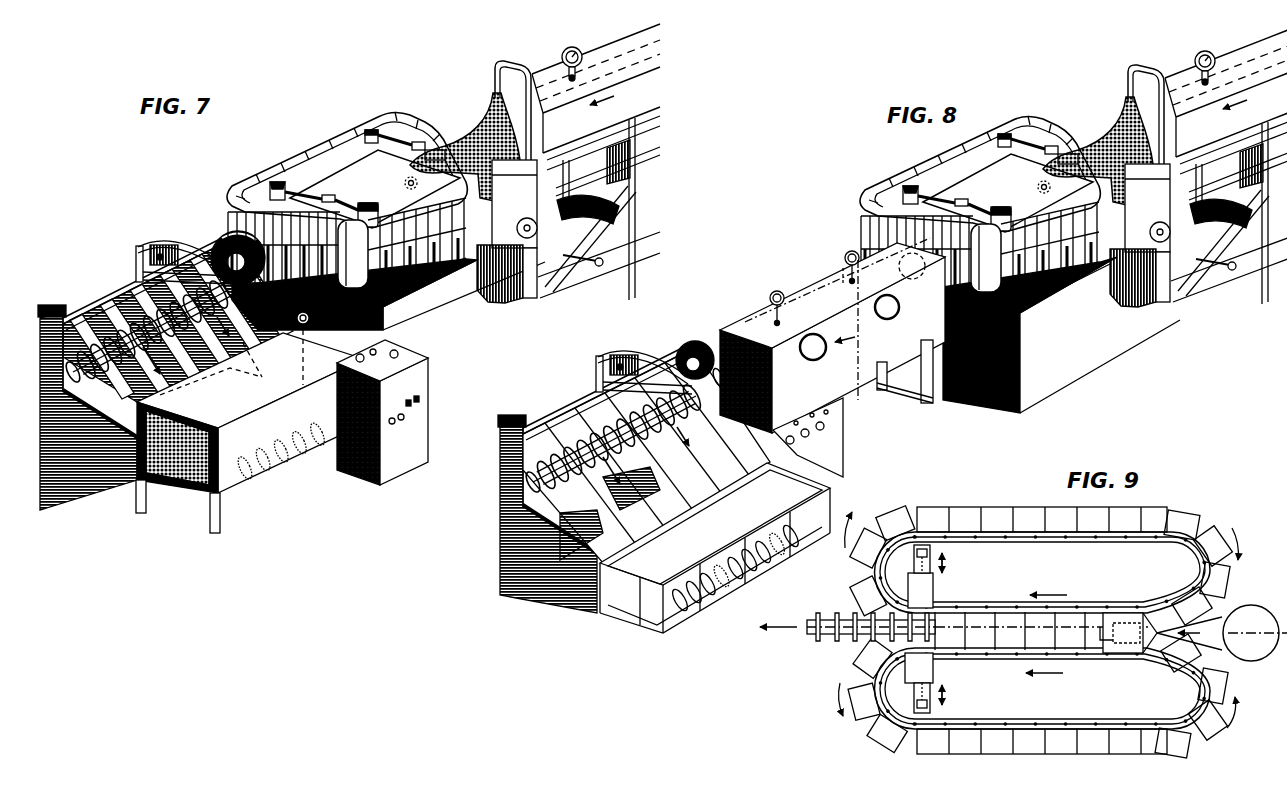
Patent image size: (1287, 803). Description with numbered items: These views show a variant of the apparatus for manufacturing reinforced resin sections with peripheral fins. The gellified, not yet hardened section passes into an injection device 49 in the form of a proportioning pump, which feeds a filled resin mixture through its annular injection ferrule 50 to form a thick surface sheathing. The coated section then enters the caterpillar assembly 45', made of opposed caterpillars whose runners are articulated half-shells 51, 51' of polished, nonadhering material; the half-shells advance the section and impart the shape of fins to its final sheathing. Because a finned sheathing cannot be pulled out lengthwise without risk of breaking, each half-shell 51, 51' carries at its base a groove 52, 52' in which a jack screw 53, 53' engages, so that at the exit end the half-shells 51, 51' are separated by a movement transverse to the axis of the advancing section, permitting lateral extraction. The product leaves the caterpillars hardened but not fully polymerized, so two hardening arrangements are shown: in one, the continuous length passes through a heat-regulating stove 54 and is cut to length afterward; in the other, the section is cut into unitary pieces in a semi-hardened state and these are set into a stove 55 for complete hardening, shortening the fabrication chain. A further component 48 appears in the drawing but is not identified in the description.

In FIG. 7, the caterpillar assembly 45' is at (443, 177).
In FIG. 7, the stove 55 is at (263, 460).
In FIG. 8, the heat-regulating stove 54 is at (838, 377).
In FIG. 8, the collecting tray 48 is at (618, 619).
In FIG. 9, the injection device 49 is at (1253, 616).
In FIG. 9, the annular injection ferrule 50 is at (1103, 628).
In FIG. 9, the half-shell 51 is at (988, 645).
In FIG. 9, the half-shell 51' is at (1043, 577).
In FIG. 9, the groove 52 is at (960, 656).
In FIG. 9, the groove 52' is at (943, 576).
In FIG. 9, the jack screw 53 is at (917, 695).
In FIG. 9, the jack screw 53' is at (1042, 519).